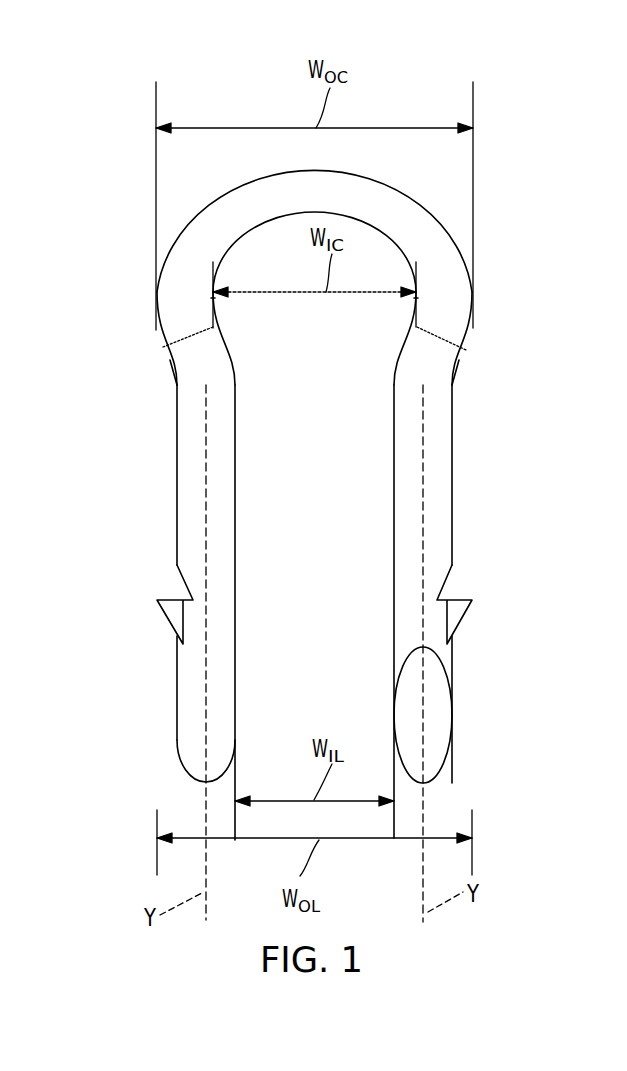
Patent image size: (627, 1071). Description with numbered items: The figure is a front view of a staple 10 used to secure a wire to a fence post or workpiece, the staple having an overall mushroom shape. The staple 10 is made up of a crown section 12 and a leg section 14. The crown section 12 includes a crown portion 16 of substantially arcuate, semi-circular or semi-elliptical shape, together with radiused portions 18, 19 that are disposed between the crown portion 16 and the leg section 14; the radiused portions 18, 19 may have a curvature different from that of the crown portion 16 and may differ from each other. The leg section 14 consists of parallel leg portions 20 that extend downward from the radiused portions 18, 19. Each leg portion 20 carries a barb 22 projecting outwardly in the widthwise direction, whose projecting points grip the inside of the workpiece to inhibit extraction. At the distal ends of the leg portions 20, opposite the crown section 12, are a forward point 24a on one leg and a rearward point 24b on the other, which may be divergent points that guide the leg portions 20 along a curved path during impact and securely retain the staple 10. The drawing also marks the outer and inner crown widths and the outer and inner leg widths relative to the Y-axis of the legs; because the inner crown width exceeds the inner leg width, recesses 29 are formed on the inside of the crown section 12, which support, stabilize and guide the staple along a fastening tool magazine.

The staple 10 is at (530, 132).
The crown section 12 is at (455, 385).
The leg section 14 is at (206, 782).
The crown portion 16 is at (475, 280).
The radiused portion 18 is at (168, 354).
The radiused portion 19 is at (160, 337).
The leg portion 20 is at (453, 522).
The barb 22 is at (466, 603).
The forward point 24a is at (455, 716).
The rearward point 24b is at (180, 742).
The recess 29 is at (217, 297).